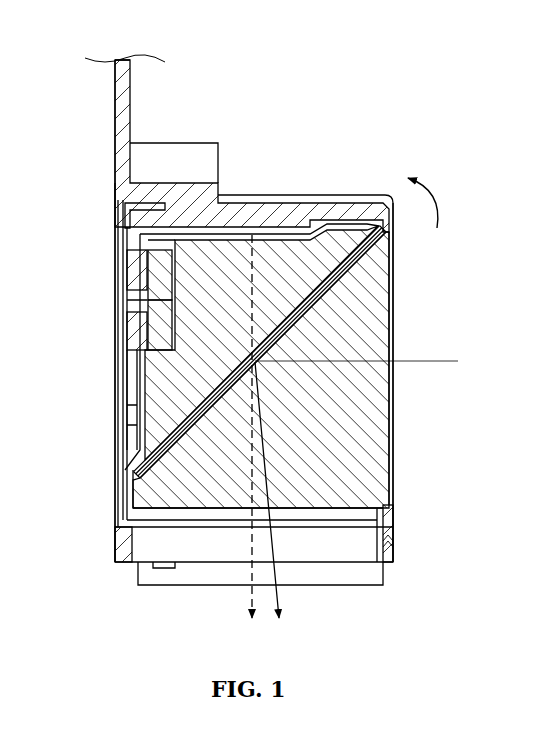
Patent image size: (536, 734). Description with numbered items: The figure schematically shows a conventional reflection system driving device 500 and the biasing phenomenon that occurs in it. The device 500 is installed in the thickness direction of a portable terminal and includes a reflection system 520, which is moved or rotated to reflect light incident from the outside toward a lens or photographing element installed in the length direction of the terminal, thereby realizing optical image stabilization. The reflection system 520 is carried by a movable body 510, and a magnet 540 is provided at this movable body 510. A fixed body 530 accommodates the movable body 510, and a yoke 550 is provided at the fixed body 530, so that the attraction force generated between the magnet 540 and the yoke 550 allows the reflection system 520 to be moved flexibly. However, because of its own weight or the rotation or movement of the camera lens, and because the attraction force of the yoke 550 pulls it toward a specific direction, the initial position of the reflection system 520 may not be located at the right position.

The reflection system driving device 500 is at (423, 103).
The movable body 510 is at (350, 271).
The reflection system 520 is at (353, 447).
The fixed body 530 is at (362, 195).
The magnet 540 is at (212, 240).
The yoke 550 is at (117, 262).